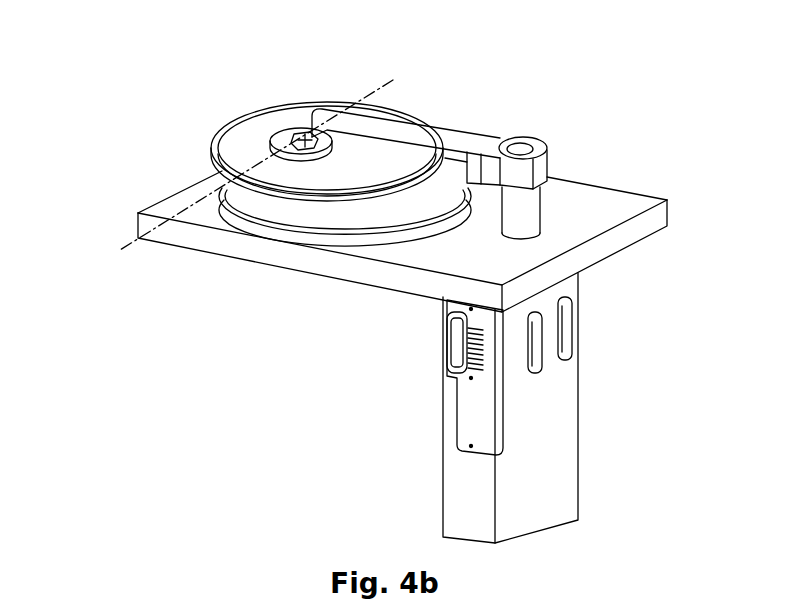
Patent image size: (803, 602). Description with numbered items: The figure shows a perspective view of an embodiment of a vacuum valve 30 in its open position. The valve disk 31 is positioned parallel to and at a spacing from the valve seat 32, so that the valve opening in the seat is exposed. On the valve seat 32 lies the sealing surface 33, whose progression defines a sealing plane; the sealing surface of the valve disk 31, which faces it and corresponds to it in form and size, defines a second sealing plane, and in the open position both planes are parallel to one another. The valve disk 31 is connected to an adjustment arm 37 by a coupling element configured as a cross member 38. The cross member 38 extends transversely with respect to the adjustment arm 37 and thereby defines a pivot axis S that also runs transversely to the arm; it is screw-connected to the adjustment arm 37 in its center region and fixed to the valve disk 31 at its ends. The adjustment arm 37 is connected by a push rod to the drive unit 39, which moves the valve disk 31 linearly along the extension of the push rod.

The vacuum valve 30 is at (146, 49).
The valve disk 31 is at (237, 147).
The valve seat 32 is at (180, 200).
The sealing surface 33 is at (223, 203).
The adjustment arm 37 is at (443, 132).
The cross member 38 is at (297, 138).
The drive unit 39 is at (600, 425).
The pivot axis S is at (392, 83).